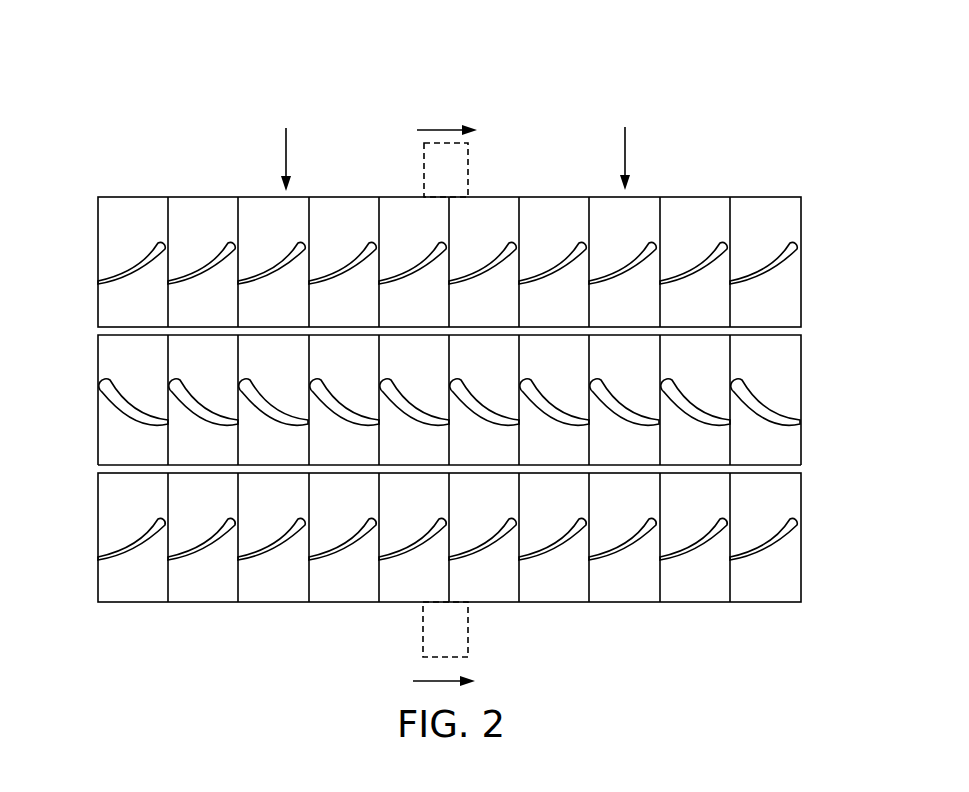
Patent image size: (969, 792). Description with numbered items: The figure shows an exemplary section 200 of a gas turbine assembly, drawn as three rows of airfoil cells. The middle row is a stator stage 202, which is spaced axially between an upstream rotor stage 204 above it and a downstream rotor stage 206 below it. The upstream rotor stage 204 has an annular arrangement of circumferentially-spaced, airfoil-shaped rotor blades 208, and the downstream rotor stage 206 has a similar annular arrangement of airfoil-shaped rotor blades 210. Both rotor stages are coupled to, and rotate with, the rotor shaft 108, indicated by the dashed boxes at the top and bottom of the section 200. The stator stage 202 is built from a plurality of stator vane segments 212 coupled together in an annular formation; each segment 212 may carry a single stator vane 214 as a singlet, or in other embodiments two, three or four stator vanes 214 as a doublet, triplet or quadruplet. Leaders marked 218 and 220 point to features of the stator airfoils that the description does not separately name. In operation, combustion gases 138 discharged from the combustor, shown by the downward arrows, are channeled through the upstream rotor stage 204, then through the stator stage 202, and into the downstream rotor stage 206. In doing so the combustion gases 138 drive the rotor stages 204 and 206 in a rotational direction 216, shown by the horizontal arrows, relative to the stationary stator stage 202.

The section 200 is at (685, 70).
The upstream rotor stage 204 is at (480, 235).
The stator stage 202 is at (447, 476).
The downstream rotor stage 206 is at (447, 537).
The rotor blades 208 is at (637, 252).
The rotor blades 210 is at (300, 522).
The stator vane segments 212 is at (698, 465).
The stator vane 214 is at (668, 382).
The rotational direction 216 is at (440, 129).
The blade airfoil 218 is at (108, 407).
The leading edge 220 is at (168, 378).
The combustion gases 138 is at (284, 146).
The rotor shaft 108 is at (468, 170).